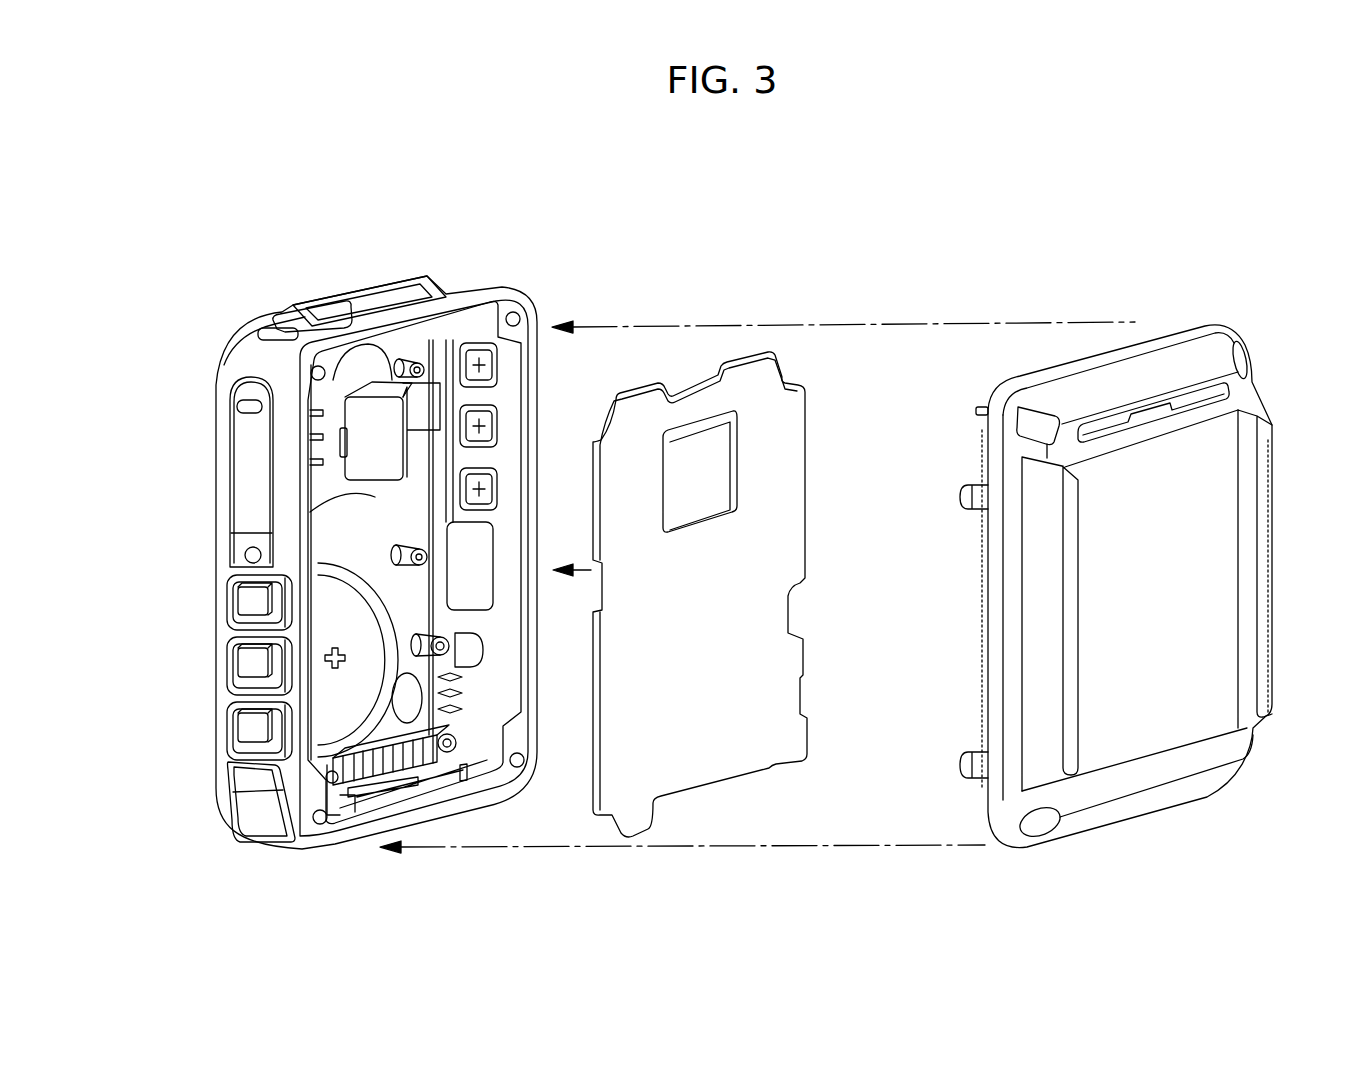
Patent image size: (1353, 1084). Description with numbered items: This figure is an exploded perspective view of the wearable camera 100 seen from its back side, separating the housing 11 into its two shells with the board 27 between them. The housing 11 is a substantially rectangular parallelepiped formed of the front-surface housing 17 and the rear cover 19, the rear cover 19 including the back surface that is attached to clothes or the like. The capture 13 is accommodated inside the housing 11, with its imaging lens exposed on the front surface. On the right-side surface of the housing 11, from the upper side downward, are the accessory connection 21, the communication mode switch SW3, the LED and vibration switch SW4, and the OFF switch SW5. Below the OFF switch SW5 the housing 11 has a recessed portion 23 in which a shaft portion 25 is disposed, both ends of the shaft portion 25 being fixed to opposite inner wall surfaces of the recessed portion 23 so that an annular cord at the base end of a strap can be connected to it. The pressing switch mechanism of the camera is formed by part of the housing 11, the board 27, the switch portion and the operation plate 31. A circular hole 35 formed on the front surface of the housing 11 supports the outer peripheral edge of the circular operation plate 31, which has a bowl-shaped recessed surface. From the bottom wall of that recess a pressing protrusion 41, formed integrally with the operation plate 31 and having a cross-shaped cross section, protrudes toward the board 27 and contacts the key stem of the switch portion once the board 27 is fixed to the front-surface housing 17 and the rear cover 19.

The wearable camera 100 is at (326, 246).
The housing 11 is at (1123, 226).
The front-surface housing 17 is at (483, 283).
The rear cover 19 is at (1134, 340).
The capture 13 is at (323, 397).
The accessory connection 21 is at (243, 453).
The operation plate 31 is at (330, 588).
The communication mode switch SW3 is at (247, 600).
The LED and vibration switch SW4 is at (247, 665).
The OFF switch SW5 is at (247, 730).
The recessed portion 23 is at (247, 775).
The shaft portion 25 is at (247, 805).
The board 27 is at (787, 440).
The circular hole 35 is at (387, 670).
The pressing protrusion 41 is at (333, 680).